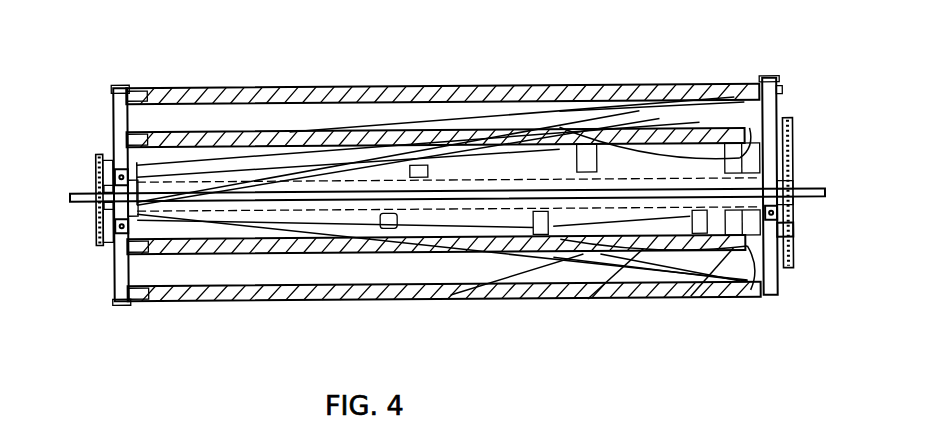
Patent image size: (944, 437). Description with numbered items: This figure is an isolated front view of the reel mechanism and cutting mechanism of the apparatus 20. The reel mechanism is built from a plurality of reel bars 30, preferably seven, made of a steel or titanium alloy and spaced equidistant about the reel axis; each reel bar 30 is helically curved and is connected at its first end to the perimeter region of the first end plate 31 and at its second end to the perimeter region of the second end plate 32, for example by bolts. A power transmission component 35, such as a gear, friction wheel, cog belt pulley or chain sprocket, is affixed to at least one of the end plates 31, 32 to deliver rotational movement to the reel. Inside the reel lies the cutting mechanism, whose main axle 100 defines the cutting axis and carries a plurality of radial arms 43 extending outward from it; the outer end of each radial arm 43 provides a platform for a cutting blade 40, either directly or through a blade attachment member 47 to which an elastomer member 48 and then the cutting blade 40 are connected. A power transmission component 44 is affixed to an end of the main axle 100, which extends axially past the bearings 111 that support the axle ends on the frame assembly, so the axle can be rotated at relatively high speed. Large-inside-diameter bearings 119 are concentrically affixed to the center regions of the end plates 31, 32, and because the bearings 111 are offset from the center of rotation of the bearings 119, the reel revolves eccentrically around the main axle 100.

The apparatus 20 is at (302, 85).
The reel bars 30 is at (160, 88).
The first end plate 31 is at (112, 115).
The second end plate 32 is at (778, 112).
The power transmission component 35 is at (794, 156).
The cutting blades 40 is at (643, 118).
The radial arms 43 is at (610, 138).
The power transmission component 44 is at (97, 165).
The blade attachment member 47 is at (640, 255).
The elastomer member 48 is at (580, 245).
The main axle 100 is at (808, 199).
The bearings 111 is at (97, 215).
The bearings 119 is at (110, 245).